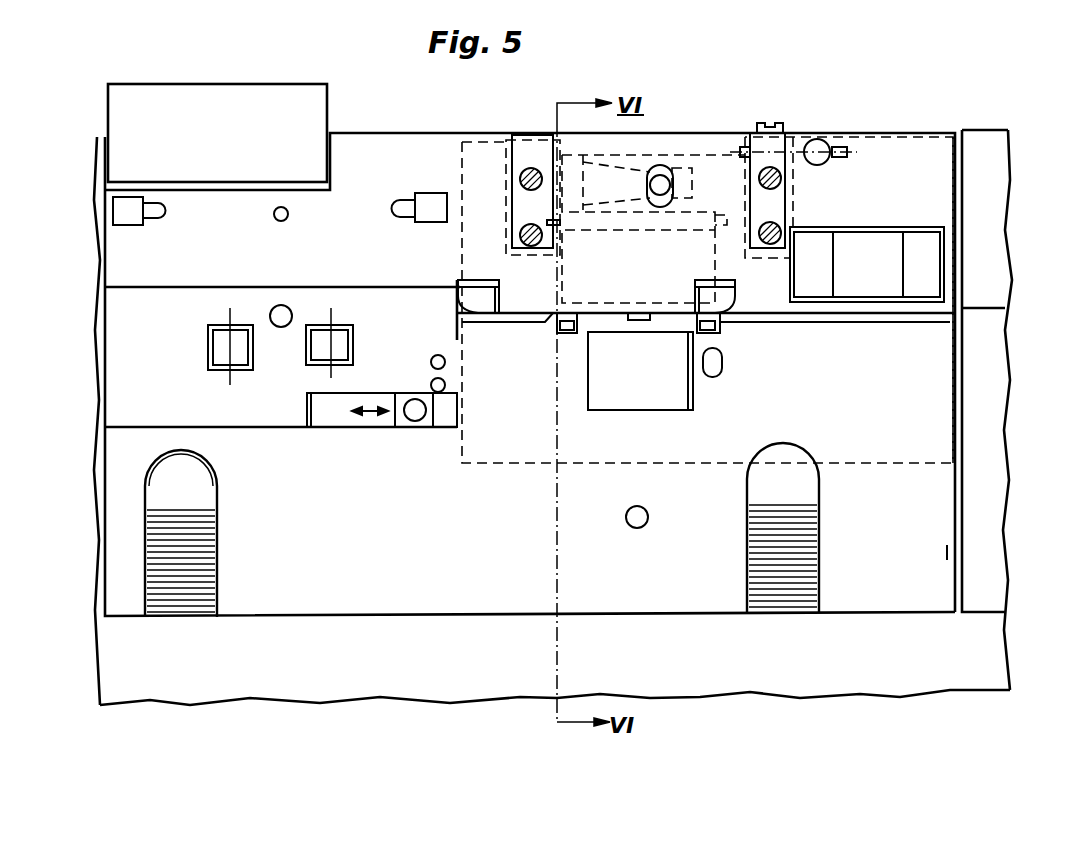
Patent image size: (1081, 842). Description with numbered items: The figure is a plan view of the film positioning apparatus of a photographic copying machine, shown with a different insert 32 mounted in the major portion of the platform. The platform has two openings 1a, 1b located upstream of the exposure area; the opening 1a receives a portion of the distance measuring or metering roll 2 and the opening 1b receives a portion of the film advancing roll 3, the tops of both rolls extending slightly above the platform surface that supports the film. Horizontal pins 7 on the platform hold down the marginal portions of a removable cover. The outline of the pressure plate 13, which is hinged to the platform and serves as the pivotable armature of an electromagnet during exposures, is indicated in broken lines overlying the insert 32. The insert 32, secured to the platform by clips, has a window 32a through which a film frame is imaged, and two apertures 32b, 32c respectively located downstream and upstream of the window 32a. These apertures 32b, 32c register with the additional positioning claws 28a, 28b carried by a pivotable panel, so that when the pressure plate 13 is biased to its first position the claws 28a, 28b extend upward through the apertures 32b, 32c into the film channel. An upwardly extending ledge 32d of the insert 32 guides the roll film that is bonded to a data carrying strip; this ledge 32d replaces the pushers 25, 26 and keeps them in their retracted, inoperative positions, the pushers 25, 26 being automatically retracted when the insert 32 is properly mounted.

The opening 1a is at (210, 325).
The opening 1b is at (313, 325).
The distance measuring or metering roll 2 is at (230, 347).
The film advancing roll 3 is at (332, 345).
The horizontal pin 7 is at (156, 214).
The pressure plate 13 is at (950, 186).
The pusher 25 is at (487, 298).
The pusher 26 is at (735, 291).
The additional positioning claw 28a is at (566, 312).
The additional positioning claw 28b is at (693, 312).
The insert 32 is at (947, 551).
The window 32a is at (697, 410).
The aperture 32b is at (722, 332).
The aperture 32c is at (576, 333).
The ledge 32d is at (507, 322).